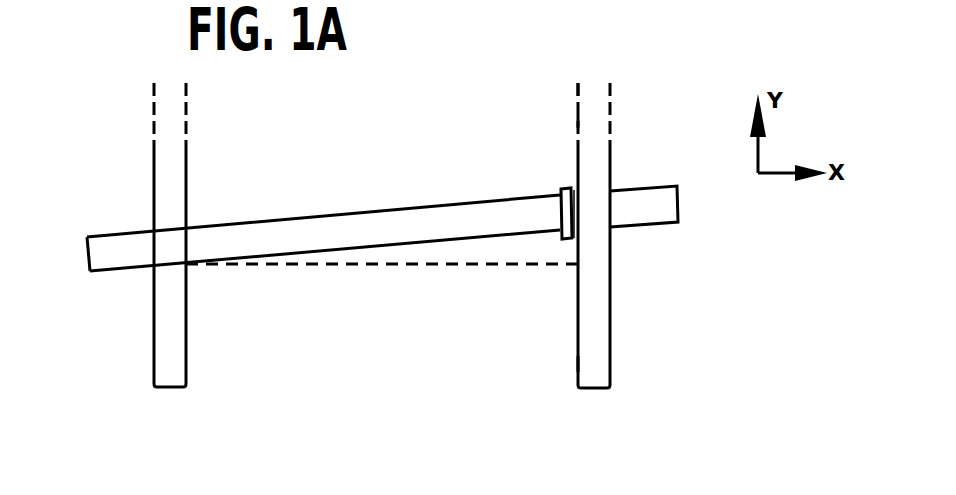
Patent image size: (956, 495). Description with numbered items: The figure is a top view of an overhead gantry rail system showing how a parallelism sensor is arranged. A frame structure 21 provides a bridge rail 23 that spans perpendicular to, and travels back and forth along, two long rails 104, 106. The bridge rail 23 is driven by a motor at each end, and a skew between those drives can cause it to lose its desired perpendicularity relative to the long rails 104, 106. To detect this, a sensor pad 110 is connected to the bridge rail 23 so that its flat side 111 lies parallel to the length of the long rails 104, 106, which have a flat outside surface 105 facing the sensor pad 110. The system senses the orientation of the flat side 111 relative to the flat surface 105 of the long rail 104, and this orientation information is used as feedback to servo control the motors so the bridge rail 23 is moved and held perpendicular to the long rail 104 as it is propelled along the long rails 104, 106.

The frame structure 21 is at (554, 80).
The bridge rail 23 is at (246, 222).
The long rail 104 is at (612, 319).
The flat outside surface 105 is at (576, 123).
The long rail 106 is at (153, 316).
The sensor pad 110 is at (495, 329).
The flat side 111 is at (572, 187).